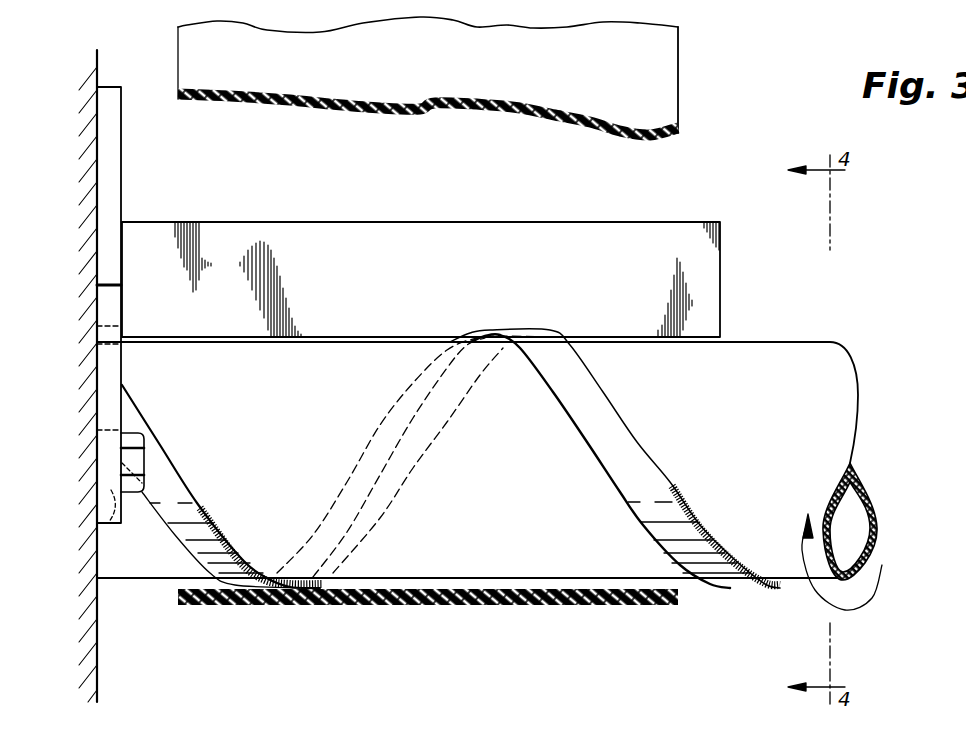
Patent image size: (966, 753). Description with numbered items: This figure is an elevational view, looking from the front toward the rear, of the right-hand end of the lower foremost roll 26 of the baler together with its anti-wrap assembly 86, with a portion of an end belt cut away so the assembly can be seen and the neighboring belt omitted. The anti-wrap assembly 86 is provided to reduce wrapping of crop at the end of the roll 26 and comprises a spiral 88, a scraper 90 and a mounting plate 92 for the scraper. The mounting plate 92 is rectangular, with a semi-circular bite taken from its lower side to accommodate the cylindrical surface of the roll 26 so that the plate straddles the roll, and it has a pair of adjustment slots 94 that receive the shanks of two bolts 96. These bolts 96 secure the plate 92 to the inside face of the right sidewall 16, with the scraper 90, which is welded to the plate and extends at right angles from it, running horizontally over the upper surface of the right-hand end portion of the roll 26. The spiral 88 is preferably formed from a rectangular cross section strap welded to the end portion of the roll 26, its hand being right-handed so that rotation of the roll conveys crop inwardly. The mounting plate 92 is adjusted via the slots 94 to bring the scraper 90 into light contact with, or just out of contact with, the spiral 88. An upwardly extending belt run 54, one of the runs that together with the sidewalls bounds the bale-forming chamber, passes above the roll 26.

The right sidewall 16 is at (88, 92).
The lower foremost roll 26 is at (757, 414).
The upwardly extending belt run 54 is at (449, 62).
The anti-wrap assembly 86 is at (270, 216).
The spiral 88 is at (587, 441).
The scraper 90 is at (381, 273).
The mounting plate 92 is at (113, 142).
The adjustment slots 94 is at (113, 522).
The bolts 96 is at (137, 462).